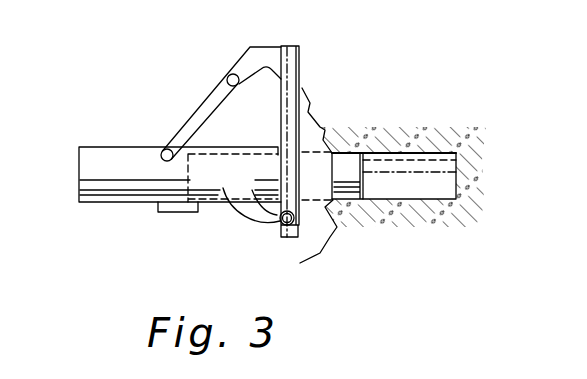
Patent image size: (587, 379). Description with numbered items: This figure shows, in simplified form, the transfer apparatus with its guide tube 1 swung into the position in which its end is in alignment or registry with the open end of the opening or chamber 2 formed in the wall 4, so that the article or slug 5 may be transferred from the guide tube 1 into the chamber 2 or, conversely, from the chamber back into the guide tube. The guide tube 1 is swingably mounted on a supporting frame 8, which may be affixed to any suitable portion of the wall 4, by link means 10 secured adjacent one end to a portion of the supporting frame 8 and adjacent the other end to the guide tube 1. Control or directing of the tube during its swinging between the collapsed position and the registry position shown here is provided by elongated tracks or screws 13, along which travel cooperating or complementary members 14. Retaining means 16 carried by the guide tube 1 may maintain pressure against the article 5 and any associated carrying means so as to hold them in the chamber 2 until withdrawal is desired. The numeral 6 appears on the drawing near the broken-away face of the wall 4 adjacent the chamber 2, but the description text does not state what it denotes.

The guide tube 1 is at (115, 148).
The opening or chamber 2 is at (413, 193).
The wall 4 is at (415, 126).
The article or slug 5 is at (340, 158).
The wall opening face 6 is at (315, 130).
The supporting frame 8 is at (297, 54).
The link means 10 is at (205, 114).
The elongated tracks or screws 13 is at (291, 85).
The cooperating or complementary members 14 is at (281, 223).
The retaining means 16 is at (187, 208).